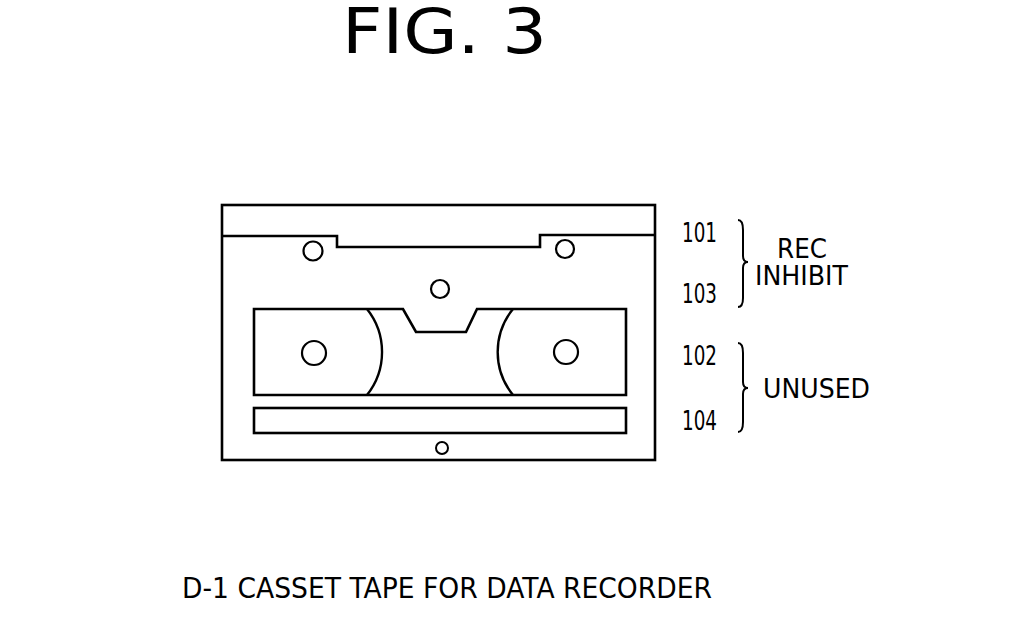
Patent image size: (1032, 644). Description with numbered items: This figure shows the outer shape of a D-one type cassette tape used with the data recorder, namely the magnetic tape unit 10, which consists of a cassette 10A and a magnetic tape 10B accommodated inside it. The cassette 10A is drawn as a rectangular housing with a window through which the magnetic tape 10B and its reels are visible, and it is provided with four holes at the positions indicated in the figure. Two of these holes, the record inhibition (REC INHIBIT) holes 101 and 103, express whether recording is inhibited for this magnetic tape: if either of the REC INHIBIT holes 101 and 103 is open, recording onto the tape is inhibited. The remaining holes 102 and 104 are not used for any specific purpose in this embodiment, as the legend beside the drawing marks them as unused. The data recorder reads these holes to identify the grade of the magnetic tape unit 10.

The magnetic tape unit 10 is at (142, 358).
The cassette 10A is at (647, 254).
The magnetic tape 10B is at (265, 382).
The record inhibition hole 101 is at (437, 280).
The hole 102 is at (442, 454).
The record inhibition hole 103 is at (564, 240).
The hole 104 is at (317, 241).